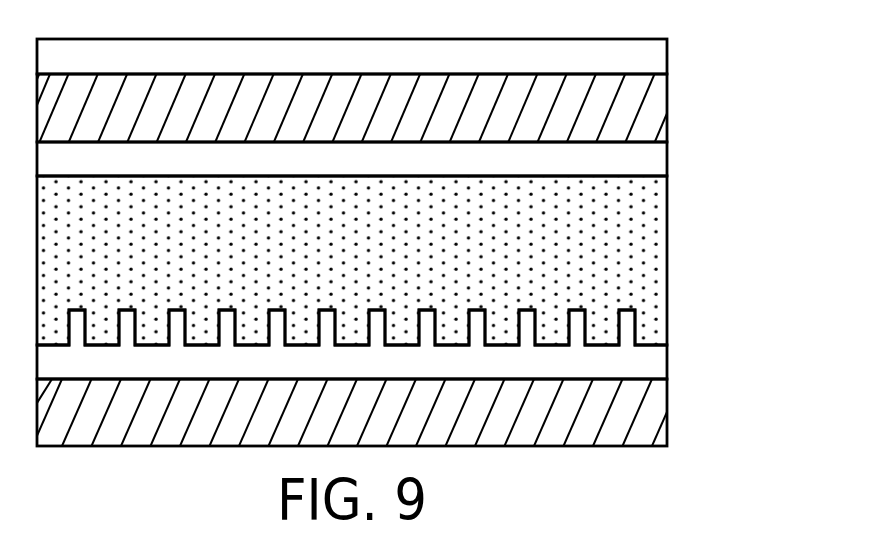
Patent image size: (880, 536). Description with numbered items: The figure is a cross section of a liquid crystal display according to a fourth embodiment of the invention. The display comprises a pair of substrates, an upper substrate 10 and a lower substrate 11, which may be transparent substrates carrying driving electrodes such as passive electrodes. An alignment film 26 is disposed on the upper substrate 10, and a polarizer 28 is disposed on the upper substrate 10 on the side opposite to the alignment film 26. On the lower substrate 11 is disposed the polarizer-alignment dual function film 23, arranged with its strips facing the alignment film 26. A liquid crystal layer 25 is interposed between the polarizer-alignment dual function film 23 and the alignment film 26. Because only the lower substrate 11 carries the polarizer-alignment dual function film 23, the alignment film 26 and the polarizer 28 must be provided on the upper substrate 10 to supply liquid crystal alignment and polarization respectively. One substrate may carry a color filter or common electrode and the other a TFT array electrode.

The polarizer 28 is at (650, 55).
The upper substrate 10 is at (650, 102).
The alignment film 26 is at (650, 155).
The liquid crystal layer 25 is at (650, 242).
The polarizer-alignment dual function film 23 is at (650, 359).
The lower substrate 11 is at (650, 409).